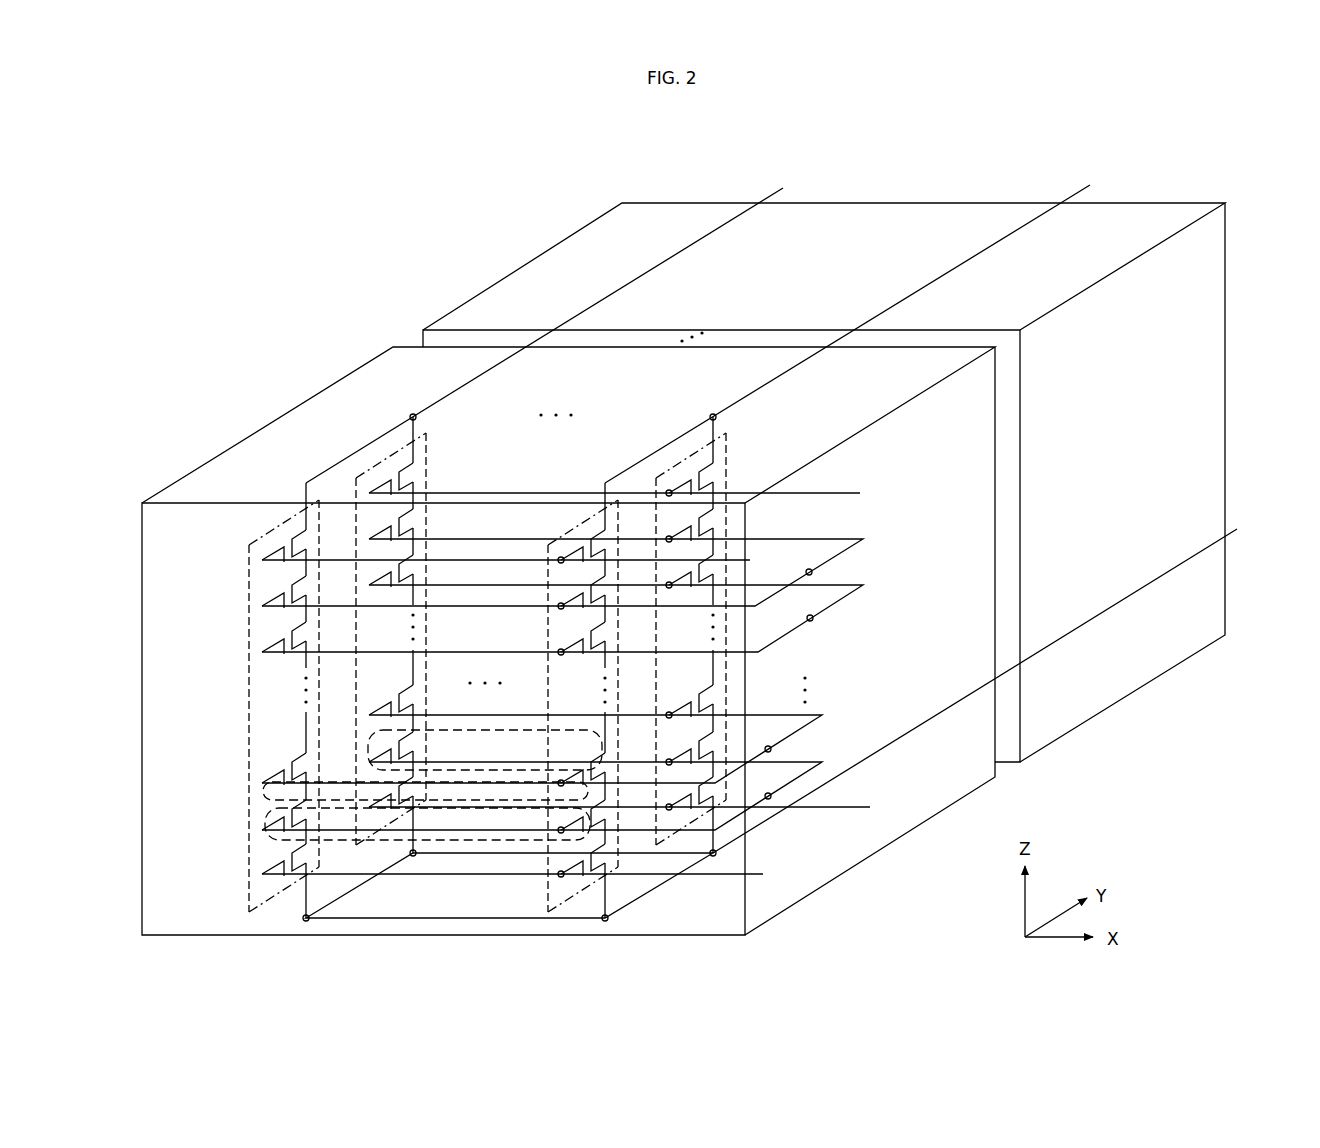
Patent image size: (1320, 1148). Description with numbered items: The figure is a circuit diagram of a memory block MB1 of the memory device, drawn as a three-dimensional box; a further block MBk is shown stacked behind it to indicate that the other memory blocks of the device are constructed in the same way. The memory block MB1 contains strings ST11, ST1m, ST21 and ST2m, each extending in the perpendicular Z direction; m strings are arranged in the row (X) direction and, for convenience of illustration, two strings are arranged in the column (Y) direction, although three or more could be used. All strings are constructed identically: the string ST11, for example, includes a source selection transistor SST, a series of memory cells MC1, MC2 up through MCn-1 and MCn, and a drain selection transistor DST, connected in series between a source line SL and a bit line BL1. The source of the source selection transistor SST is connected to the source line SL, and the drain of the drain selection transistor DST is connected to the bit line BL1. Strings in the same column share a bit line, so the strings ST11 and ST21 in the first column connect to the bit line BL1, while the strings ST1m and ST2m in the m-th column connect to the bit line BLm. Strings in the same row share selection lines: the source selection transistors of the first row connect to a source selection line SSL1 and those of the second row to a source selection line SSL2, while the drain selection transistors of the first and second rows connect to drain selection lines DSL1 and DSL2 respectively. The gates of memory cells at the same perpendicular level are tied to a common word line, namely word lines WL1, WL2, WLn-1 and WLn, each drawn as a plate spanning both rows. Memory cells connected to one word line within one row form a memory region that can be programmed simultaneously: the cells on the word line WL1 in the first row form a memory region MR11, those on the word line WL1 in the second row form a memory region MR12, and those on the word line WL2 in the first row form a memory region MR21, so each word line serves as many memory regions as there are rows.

The memory block MB1 is at (268, 425).
The memory block MBk is at (525, 267).
The bit line BL1 is at (559, 322).
The bit line BLm is at (859, 322).
The string ST11 is at (248, 693).
The string ST21 is at (393, 452).
The string ST1m is at (592, 512).
The string ST2m is at (693, 452).
The drain selection transistor DST is at (268, 546).
The memory cell MCn is at (268, 594).
The memory cell MCn-1 is at (268, 640).
The memory cell MC2 is at (268, 757).
The memory cell MC1 is at (268, 806).
The source selection transistor SST is at (268, 866).
The memory region MR12 is at (368, 748).
The memory region MR21 is at (262, 781).
The memory region MR11 is at (264, 823).
The drain selection line DSL2 is at (638, 493).
The drain selection line DSL1 is at (530, 560).
The word line WLn is at (809, 572).
The word line WLn-1 is at (810, 618).
The word line WL2 is at (768, 749).
The word line WL1 is at (768, 796).
The source selection line SSL2 is at (643, 808).
The source selection line SSL1 is at (535, 875).
The source line SL is at (783, 719).